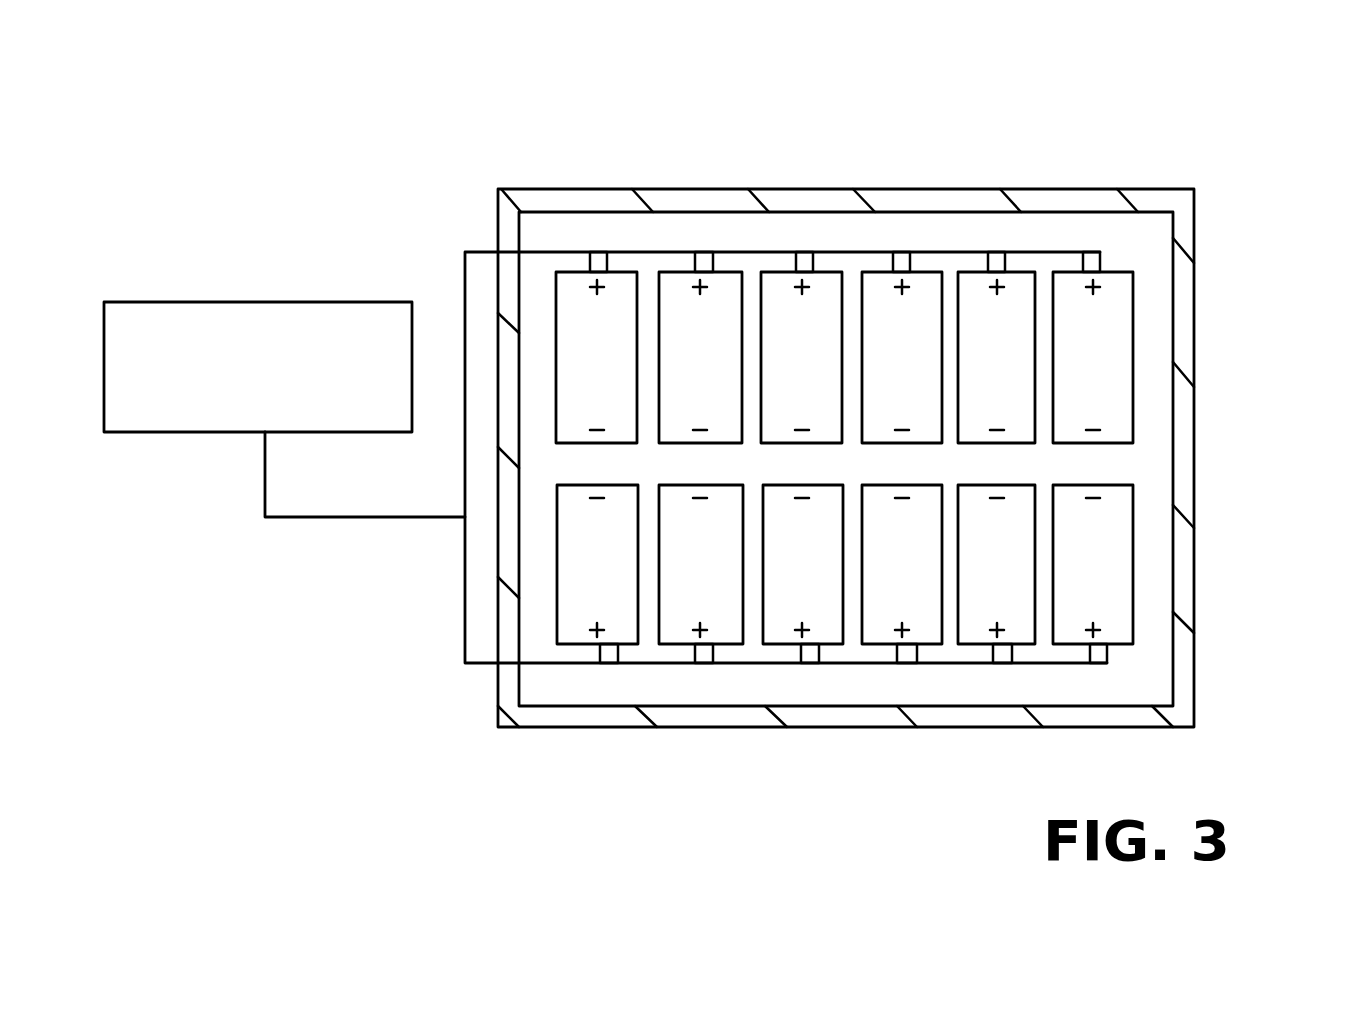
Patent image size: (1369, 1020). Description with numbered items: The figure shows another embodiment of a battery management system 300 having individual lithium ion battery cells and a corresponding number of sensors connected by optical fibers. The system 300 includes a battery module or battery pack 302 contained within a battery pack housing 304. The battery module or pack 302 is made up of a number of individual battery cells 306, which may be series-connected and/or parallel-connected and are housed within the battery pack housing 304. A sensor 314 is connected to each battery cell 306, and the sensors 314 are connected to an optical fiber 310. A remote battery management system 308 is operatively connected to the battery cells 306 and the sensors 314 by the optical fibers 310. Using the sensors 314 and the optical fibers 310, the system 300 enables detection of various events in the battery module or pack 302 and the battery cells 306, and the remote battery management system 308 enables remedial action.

The battery management system 300 is at (388, 65).
The battery module or battery pack 302 is at (1242, 399).
The battery pack housing 304 is at (1194, 313).
The battery cell 306 is at (1113, 372).
The remote battery management system 308 is at (285, 302).
The optical fiber 310 is at (477, 250).
The sensor 314 is at (803, 262).